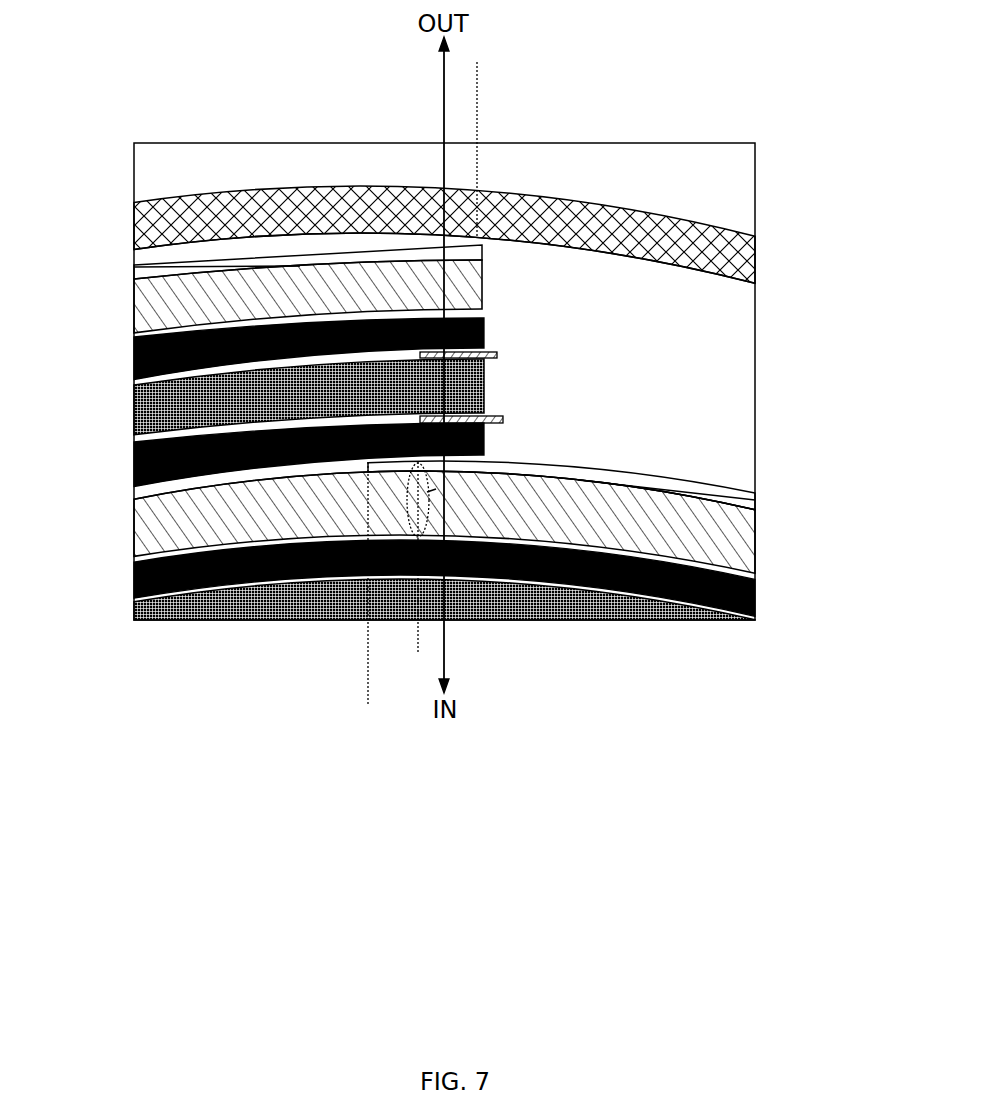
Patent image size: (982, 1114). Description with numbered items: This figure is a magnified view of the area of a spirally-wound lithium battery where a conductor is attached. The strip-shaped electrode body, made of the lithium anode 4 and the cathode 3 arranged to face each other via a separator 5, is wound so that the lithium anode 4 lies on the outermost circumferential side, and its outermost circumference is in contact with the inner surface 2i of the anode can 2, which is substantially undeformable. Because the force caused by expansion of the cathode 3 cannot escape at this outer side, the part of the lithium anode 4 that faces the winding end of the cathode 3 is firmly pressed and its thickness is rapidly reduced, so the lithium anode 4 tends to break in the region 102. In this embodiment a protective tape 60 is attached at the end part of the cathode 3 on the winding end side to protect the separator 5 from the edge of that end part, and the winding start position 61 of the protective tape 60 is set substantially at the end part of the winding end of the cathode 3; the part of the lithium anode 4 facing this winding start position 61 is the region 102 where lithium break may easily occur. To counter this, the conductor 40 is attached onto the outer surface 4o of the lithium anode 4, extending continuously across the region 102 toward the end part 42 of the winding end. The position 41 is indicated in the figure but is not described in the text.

The anode can 2 is at (562, 213).
The inner surface of anode can 2i is at (612, 261).
The cathode 3 is at (165, 412).
The lithium anode 4 is at (137, 310).
The outer surface of lithium anode 4o is at (579, 481).
The conductor 40 is at (137, 265).
The end position of thin film layer 41 is at (369, 646).
The end part of winding end 42 is at (478, 102).
The separator 5 is at (140, 360).
The protective tape 60 is at (497, 355).
The winding start position of protective tape 61 is at (419, 640).
The region 102 is at (427, 492).